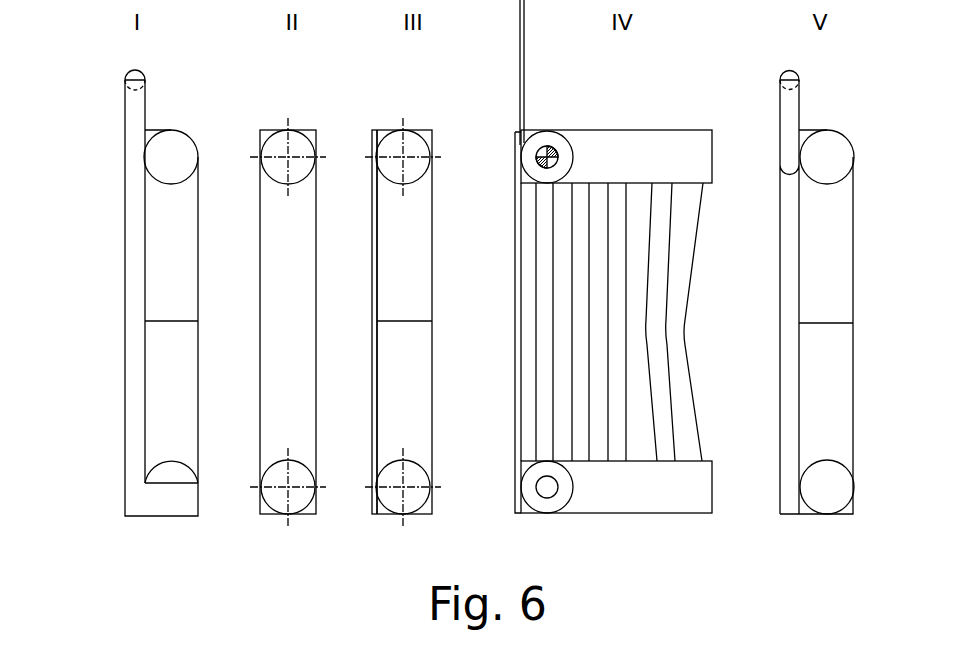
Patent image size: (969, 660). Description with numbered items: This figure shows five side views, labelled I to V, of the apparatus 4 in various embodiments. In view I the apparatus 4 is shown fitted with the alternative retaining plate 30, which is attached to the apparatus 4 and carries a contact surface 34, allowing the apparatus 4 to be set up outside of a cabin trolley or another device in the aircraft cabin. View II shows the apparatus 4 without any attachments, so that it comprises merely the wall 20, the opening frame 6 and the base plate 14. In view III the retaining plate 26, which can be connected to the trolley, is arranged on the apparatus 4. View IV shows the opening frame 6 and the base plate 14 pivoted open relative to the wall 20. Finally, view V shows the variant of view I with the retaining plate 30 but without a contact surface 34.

The apparatus 4 is at (196, 129).
The opening frame 6 is at (645, 155).
The base plate 14 is at (672, 490).
The wall 20 is at (663, 416).
The retaining plate 26 is at (378, 272).
The retaining plate 30 is at (130, 255).
The contact surface 34 is at (180, 498).